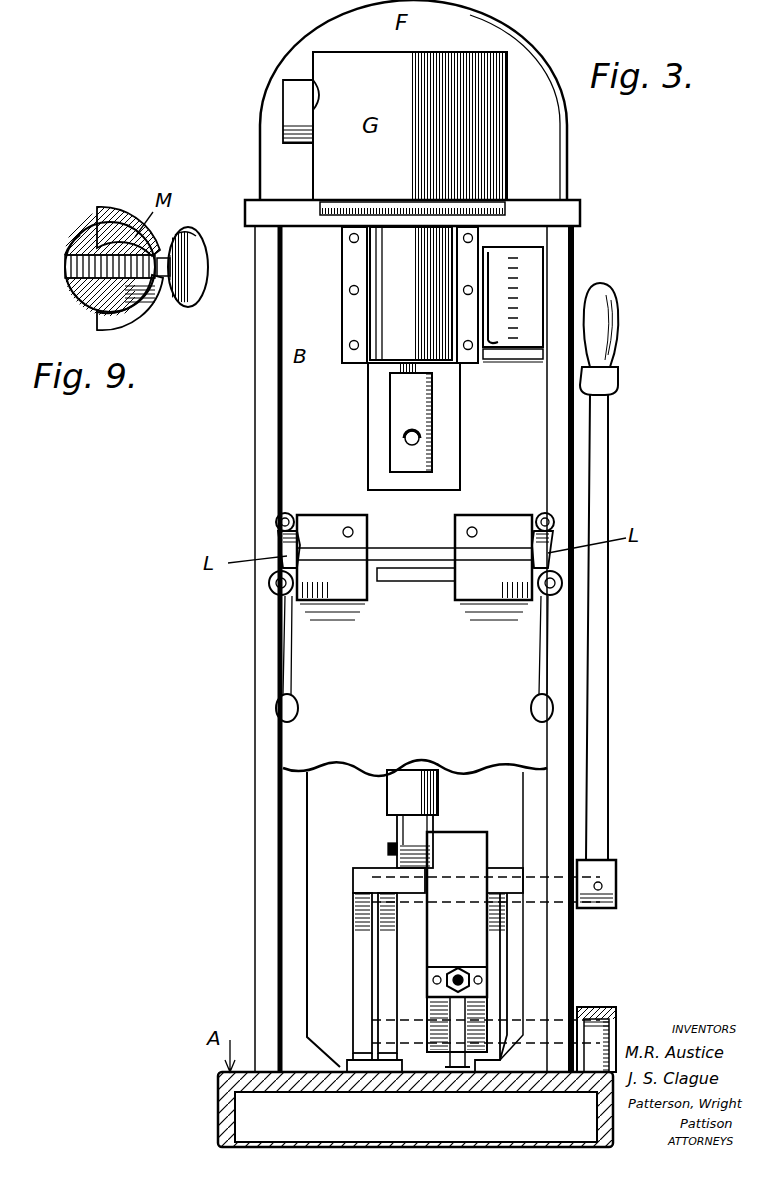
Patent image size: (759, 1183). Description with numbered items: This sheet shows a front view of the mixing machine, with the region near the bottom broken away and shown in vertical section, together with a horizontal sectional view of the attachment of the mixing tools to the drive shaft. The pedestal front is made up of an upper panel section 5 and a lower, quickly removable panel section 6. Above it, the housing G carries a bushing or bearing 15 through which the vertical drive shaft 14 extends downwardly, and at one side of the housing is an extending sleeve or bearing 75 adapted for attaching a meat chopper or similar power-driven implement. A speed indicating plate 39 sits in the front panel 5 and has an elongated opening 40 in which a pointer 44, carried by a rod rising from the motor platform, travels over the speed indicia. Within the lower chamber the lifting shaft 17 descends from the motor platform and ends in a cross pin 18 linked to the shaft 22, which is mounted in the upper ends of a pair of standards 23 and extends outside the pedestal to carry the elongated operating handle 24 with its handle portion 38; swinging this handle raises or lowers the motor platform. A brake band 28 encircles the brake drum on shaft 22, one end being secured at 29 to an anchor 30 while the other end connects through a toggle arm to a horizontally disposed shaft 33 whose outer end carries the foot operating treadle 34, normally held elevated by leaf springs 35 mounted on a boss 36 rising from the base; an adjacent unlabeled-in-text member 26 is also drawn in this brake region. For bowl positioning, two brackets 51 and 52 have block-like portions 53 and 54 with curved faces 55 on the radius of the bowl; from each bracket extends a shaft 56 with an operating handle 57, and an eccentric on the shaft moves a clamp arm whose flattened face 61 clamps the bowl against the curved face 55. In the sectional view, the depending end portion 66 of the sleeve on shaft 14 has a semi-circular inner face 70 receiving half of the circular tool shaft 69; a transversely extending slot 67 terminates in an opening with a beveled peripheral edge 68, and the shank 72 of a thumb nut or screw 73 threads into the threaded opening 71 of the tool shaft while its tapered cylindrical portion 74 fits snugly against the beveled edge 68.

In FIG. 3, the upper panel section 5 is at (293, 468).
In FIG. 3, the lower removable panel section 6 is at (293, 758).
In FIG. 3, the drive shaft 14 is at (405, 365).
In FIG. 3, the bushing or bearing 15 is at (393, 290).
In FIG. 3, the lifting shaft 17 is at (438, 778).
In FIG. 3, the cross pin 18 is at (392, 847).
In FIG. 3, the shaft 22 is at (618, 892).
In FIG. 3, the standards 23 is at (515, 953).
In FIG. 3, the operating handle 24 is at (612, 728).
In FIG. 3, the guide plate 26 is at (362, 956).
In FIG. 3, the brake band 28 is at (473, 835).
In FIG. 3, the securing point 29 is at (458, 968).
In FIG. 3, the anchor 30 is at (440, 1030).
In FIG. 3, the horizontally disposed shaft 33 is at (582, 1000).
In FIG. 3, the foot operating treadle 34 is at (612, 1008).
In FIG. 3, the leaf springs 35 is at (612, 1021).
In FIG. 3, the boss 36 is at (415, 1109).
In FIG. 3, the handle portion 38 is at (621, 327).
In FIG. 3, the speed indicating plate 39 is at (520, 247).
In FIG. 3, the elongated opening 40 is at (450, 266).
In FIG. 3, the pointer 44 is at (498, 358).
In FIG. 3, the bracket 51 is at (325, 518).
In FIG. 3, the bracket 52 is at (497, 520).
In FIG. 3, the block-like portion 53 is at (290, 592).
In FIG. 3, the block-like portion 54 is at (552, 612).
In FIG. 3, the curved face 55 is at (339, 592).
In FIG. 3, the shaft 56 is at (553, 583).
In FIG. 3, the operating handle 57 is at (276, 712).
In FIG. 3, the flattened face 61 is at (276, 527).
In FIG. 9, the depending end portion 66 is at (108, 208).
In FIG. 3, the transversely extending slot 67 is at (395, 440).
In FIG. 3, the beveled peripheral edge 68 is at (417, 442).
In FIG. 9, the tool shaft 69 is at (85, 302).
In FIG. 9, the semi-circular inner face 70 is at (135, 312).
In FIG. 9, the threaded opening 71 is at (65, 262).
In FIG. 9, the shank 72 is at (85, 250).
In FIG. 9, the thumb nut or screw 73 is at (202, 292).
In FIG. 9, the tapered cylindrical portion 74 is at (180, 248).
In FIG. 3, the extending sleeve or bearing 75 is at (297, 88).